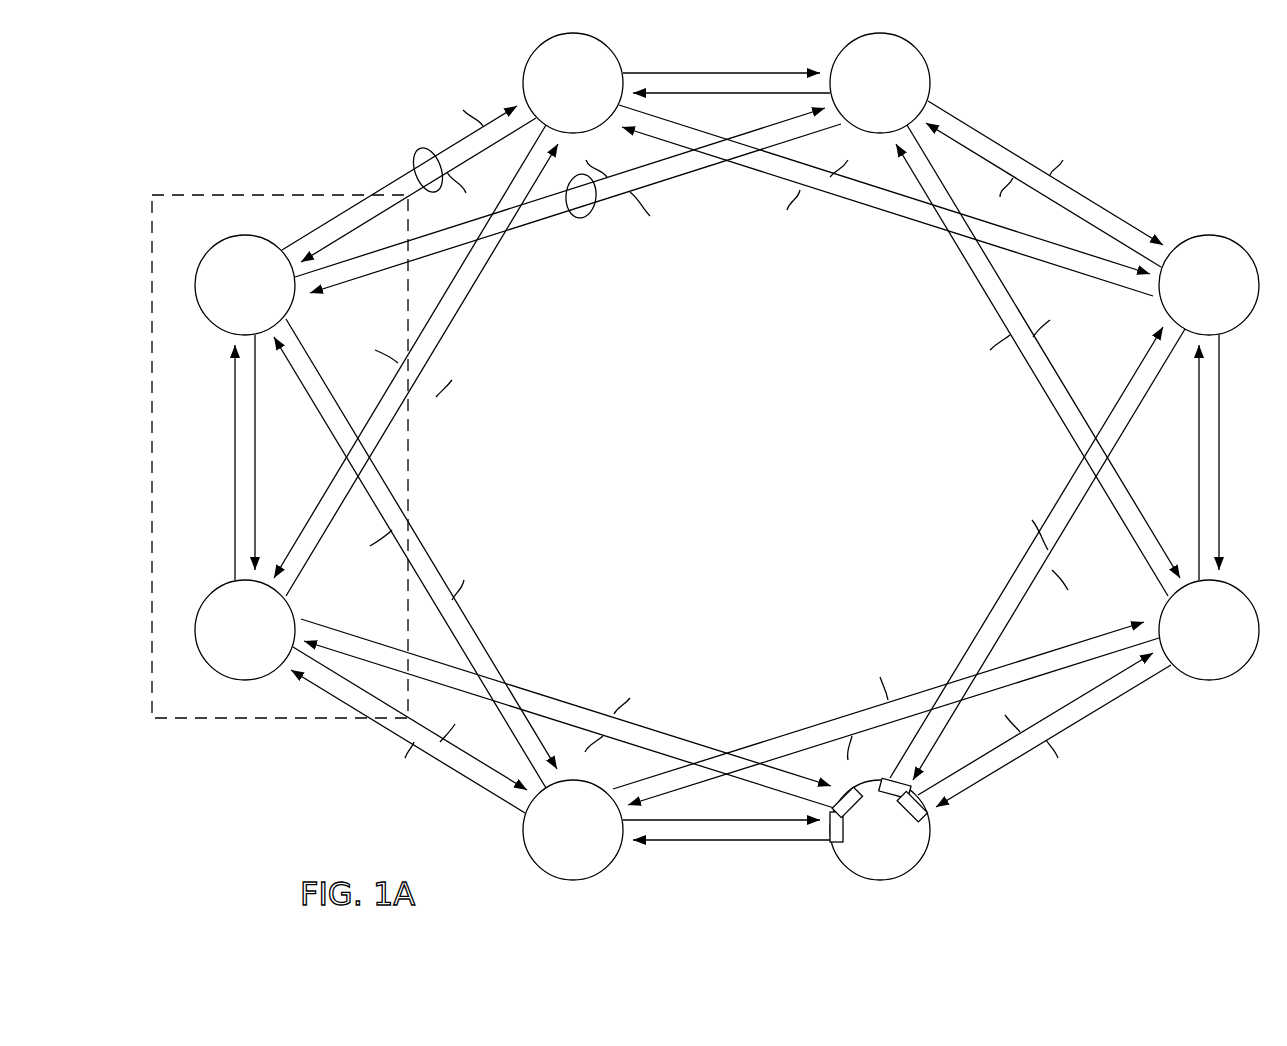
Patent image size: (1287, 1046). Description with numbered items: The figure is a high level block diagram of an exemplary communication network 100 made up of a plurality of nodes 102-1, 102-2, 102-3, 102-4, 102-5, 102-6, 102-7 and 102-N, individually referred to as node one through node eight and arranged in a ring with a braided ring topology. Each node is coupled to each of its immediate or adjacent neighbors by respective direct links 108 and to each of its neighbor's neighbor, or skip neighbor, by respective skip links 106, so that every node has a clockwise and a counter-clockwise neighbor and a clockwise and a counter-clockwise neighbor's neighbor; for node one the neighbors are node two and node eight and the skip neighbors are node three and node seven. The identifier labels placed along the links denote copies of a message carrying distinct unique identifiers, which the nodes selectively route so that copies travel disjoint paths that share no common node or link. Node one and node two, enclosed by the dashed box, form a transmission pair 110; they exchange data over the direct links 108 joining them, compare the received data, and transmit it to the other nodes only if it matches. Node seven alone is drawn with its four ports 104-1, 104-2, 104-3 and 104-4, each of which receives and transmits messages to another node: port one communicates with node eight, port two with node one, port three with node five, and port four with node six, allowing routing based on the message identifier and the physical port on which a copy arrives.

The communication network 100 is at (1128, 135).
The node 102-1 is at (213, 676).
The node 102-2 is at (208, 242).
The node 102-3 is at (524, 66).
The node 102-4 is at (930, 66).
The node 102-5 is at (1196, 237).
The node 102-6 is at (1204, 680).
The node 102-7 is at (928, 838).
The node 102-N is at (522, 836).
The port 104-1 is at (835, 832).
The port 104-2 is at (848, 805).
The port 104-3 is at (894, 797).
The port 104-4 is at (922, 810).
The skip link 106 is at (586, 220).
The direct link 108 is at (424, 150).
The transmission pair 110 is at (268, 195).